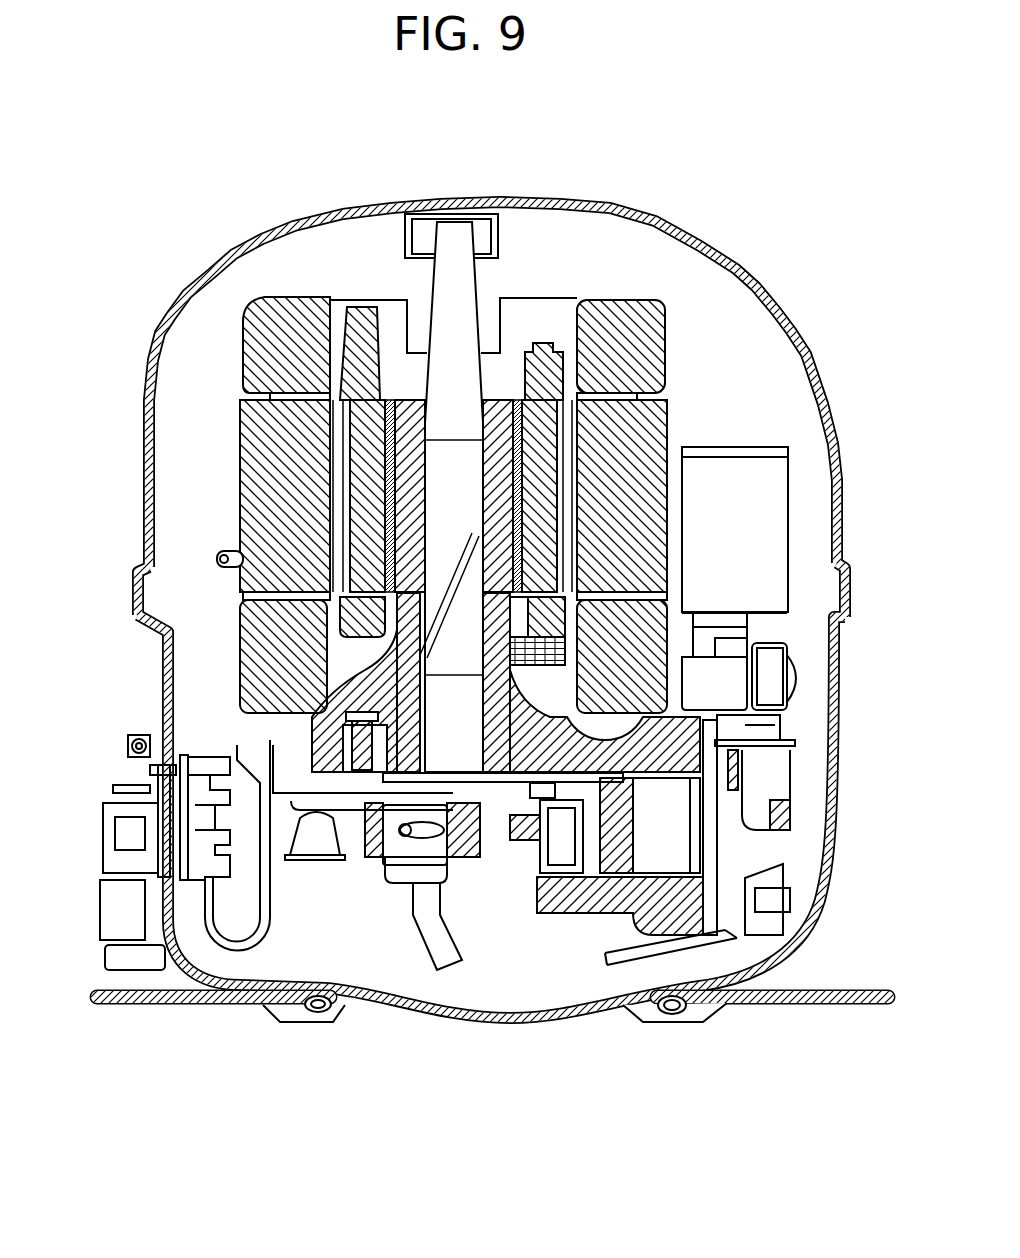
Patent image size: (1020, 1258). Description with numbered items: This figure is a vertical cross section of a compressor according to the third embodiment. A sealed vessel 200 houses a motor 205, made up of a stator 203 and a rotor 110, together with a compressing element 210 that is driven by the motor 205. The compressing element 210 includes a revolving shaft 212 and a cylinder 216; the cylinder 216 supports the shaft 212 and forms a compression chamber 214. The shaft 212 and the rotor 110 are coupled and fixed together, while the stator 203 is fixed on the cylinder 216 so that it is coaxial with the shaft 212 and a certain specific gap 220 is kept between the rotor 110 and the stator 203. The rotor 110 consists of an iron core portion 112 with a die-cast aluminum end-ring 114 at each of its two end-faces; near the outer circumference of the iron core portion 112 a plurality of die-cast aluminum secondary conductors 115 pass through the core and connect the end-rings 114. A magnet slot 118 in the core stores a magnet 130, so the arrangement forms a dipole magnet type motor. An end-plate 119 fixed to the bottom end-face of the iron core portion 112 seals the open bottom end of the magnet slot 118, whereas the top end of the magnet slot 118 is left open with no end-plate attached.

The rotor 110 is at (457, 340).
The iron core portion 112 is at (335, 393).
The end-ring 114 is at (363, 327).
The secondary conductors 115 is at (352, 478).
The magnet slot 118 is at (387, 520).
The end-plate 119 is at (385, 672).
The magnet 130 is at (393, 533).
The sealed vessel 200 is at (697, 228).
The stator 203 is at (633, 430).
The motor 205 is at (643, 347).
The compressing element 210 is at (657, 757).
The revolving shaft 212 is at (503, 373).
The compression chamber 214 is at (727, 1000).
The cylinder 216 is at (575, 900).
The gap 220 is at (345, 548).